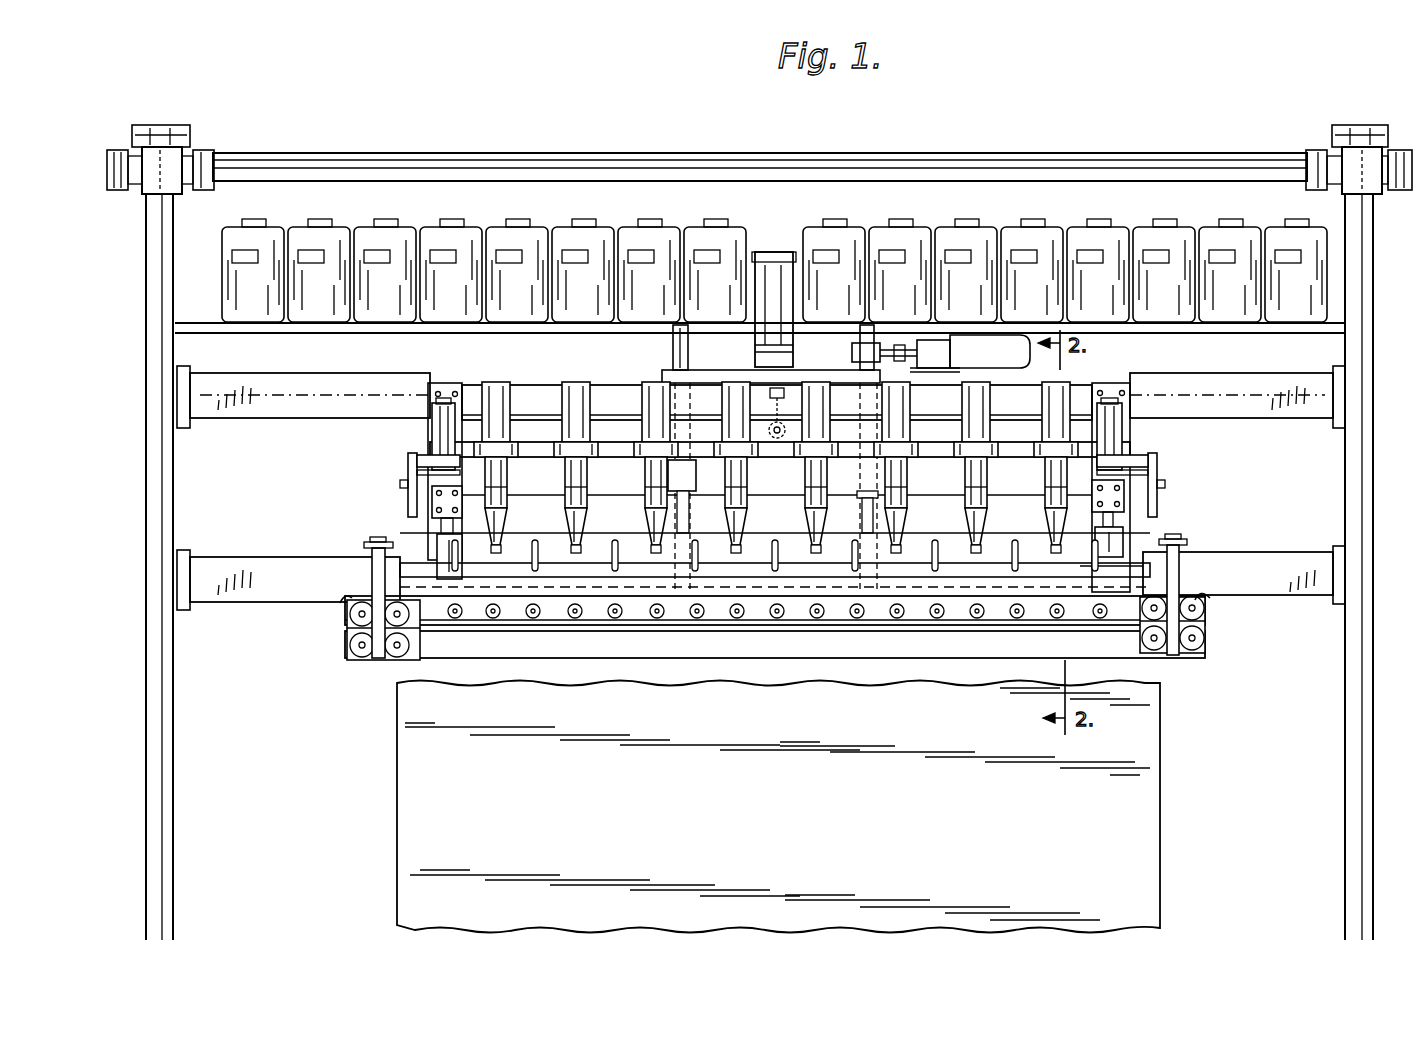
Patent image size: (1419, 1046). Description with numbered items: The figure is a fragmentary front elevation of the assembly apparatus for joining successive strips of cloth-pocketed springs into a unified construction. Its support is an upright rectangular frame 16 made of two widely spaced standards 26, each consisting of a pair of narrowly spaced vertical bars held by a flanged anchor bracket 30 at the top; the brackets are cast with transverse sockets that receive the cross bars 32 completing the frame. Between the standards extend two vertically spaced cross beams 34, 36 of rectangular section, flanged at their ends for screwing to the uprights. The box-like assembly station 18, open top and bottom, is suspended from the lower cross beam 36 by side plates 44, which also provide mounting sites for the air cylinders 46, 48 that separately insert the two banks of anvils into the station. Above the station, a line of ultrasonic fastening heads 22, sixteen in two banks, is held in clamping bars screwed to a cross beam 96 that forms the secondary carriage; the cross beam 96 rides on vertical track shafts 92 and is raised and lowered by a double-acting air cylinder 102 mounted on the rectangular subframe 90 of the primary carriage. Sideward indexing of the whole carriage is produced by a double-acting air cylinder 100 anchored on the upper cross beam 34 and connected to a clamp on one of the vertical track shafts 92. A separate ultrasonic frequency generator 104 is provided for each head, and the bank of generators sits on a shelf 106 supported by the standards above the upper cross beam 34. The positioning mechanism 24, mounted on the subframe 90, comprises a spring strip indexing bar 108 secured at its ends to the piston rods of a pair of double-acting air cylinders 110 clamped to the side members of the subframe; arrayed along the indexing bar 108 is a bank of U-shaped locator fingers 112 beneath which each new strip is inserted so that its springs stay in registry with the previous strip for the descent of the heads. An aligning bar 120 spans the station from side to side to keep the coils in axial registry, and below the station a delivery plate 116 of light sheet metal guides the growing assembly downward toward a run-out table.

The upright rectangular frame 16 is at (484, 136).
The assembly station 18 is at (664, 666).
The ultrasonic fastening heads 22 is at (507, 517).
The positioning mechanism 24 is at (428, 532).
The standards 26 is at (176, 832).
The flanged anchor bracket 30 is at (206, 152).
The cross bars 32 is at (592, 160).
The upper cross beam 34 is at (311, 405).
The lower cross beam 36 is at (305, 590).
The side plates 44 is at (375, 578).
The air cylinder 46 is at (344, 600).
The air cylinder 48 is at (418, 630).
The rectangular subframe 90 is at (541, 395).
The vertical track shafts 92 is at (689, 347).
The cross beam 96 is at (553, 482).
The double-acting air cylinder 100 is at (1006, 362).
The double-acting air cylinder 102 is at (774, 265).
The ultrasonic frequency generator 104 is at (623, 236).
The shelf 106 is at (400, 332).
The spring strip indexing bar 108 is at (600, 548).
The double-acting air cylinders 110 is at (440, 425).
The U-shaped locator fingers 112 is at (778, 548).
The delivery plate 116 is at (988, 827).
The aligning bar 120 is at (422, 465).